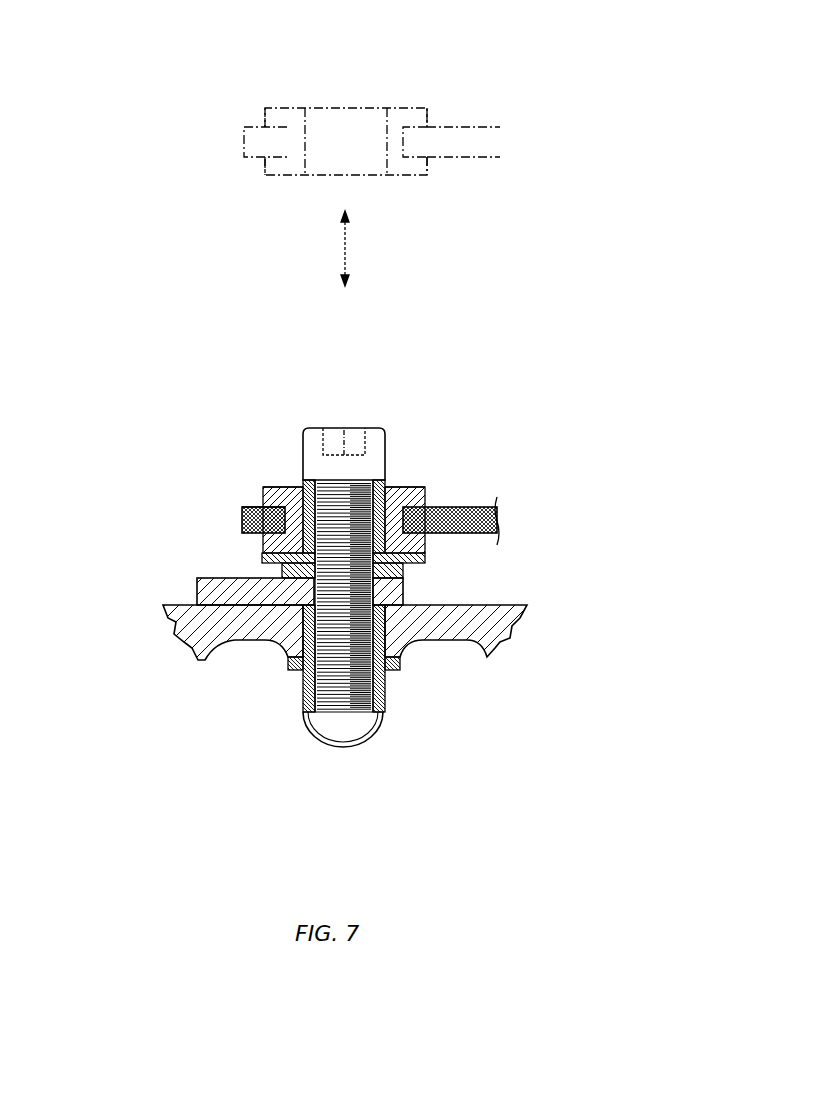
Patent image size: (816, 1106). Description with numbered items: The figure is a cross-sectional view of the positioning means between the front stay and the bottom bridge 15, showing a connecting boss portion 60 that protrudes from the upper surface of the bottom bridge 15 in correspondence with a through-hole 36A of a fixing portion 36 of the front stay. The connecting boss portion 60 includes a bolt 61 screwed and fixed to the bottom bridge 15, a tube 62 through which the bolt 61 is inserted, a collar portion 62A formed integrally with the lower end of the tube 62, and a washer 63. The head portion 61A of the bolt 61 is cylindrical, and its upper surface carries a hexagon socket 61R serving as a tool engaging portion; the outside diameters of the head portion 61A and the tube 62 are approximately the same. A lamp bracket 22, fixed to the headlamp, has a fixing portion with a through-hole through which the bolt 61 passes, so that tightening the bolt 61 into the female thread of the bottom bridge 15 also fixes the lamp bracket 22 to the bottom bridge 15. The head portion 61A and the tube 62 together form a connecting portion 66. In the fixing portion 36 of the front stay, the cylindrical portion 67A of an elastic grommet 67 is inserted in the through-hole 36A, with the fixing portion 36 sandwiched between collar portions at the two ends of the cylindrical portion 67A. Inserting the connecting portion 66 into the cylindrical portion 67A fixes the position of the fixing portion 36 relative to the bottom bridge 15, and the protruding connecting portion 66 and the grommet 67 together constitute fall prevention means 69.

The bottom bridge 15 is at (187, 630).
The lamp bracket 22 is at (203, 577).
The fixing portion 36 is at (498, 515).
The through-hole 36A is at (292, 565).
The connecting boss portion 60 is at (397, 380).
The bolt 61 is at (343, 713).
The head portion 61A is at (310, 425).
The hexagon socket 61R is at (352, 428).
The tube 62 is at (425, 492).
The collar portion 62A is at (425, 555).
The washer 63 is at (387, 580).
The connecting portion 66 is at (387, 452).
The elastic grommet 67 is at (403, 483).
The cylindrical portion 67A is at (263, 485).
The fall prevention means 69 is at (585, 293).